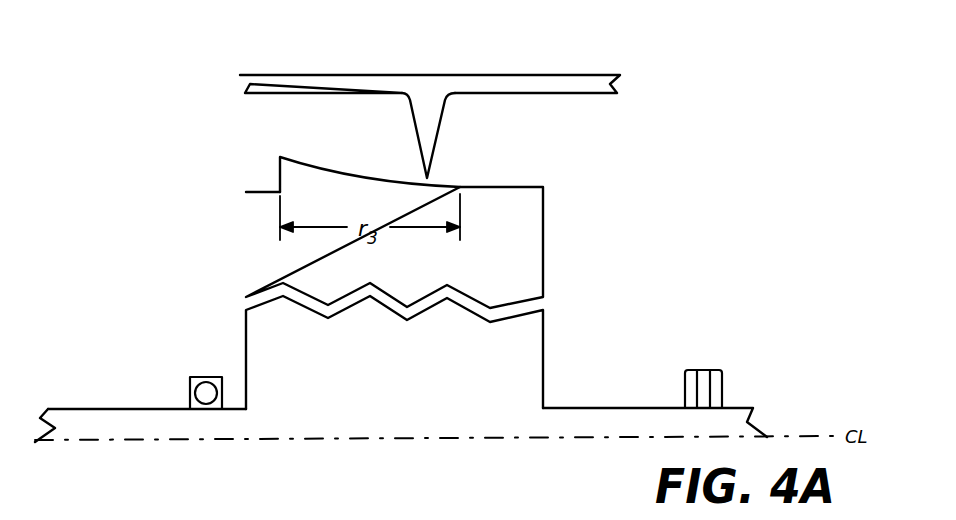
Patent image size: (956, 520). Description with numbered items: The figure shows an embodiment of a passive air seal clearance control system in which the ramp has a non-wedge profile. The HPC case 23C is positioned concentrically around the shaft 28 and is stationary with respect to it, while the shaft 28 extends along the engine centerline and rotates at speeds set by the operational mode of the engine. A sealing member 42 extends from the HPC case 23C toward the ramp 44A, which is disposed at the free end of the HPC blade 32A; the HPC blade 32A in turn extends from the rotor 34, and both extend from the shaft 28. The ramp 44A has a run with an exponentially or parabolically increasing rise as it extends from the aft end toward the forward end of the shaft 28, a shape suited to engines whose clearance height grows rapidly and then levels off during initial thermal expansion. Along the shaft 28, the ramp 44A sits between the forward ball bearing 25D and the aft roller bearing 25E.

The HPC case 23C is at (563, 74).
The sealing member 42 is at (420, 107).
The ramp 44A is at (330, 193).
The HPC blade 32A is at (527, 280).
The rotor 34 is at (517, 368).
The shaft 28 is at (527, 421).
The bearing 25D is at (190, 380).
The bearing 25E is at (723, 387).